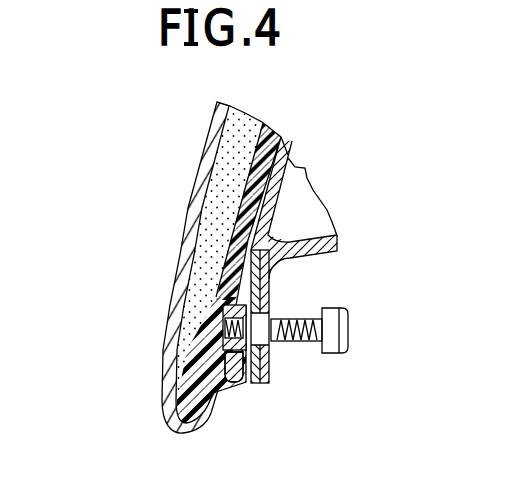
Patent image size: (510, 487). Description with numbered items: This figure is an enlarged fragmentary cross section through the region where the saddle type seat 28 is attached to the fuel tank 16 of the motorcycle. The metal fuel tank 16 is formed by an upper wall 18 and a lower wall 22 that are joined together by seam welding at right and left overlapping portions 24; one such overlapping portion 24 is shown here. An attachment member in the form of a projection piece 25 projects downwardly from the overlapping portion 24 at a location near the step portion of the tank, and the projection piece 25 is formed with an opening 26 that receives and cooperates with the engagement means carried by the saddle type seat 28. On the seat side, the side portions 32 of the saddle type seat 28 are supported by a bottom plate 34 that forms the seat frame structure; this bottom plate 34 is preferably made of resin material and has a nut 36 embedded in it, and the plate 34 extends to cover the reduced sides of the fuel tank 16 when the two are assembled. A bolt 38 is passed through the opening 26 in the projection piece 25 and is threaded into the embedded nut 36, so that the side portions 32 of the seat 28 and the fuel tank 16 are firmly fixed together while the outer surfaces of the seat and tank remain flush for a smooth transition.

The fuel tank 16 is at (346, 204).
The upper wall 18 is at (295, 167).
The lower wall 22 is at (329, 245).
The overlapping portion 24 is at (270, 281).
The projection piece 25 is at (271, 361).
The opening 26 is at (275, 341).
The saddle type seat 28 is at (146, 185).
The side portion 32 is at (185, 237).
The bottom plate 34 is at (265, 152).
The nut 36 is at (236, 390).
The bolt 38 is at (349, 330).